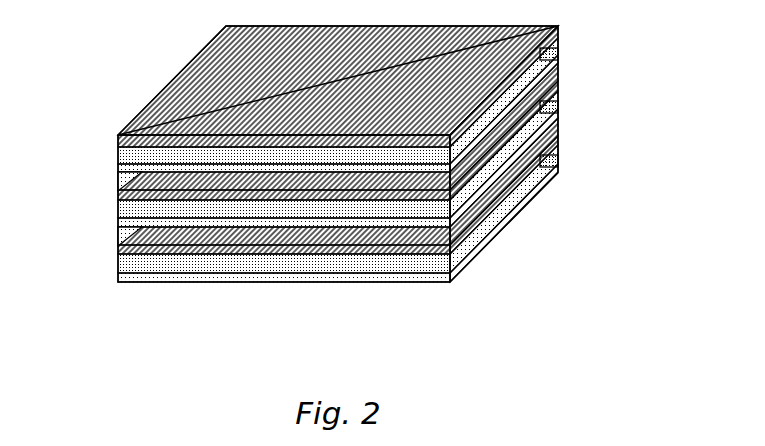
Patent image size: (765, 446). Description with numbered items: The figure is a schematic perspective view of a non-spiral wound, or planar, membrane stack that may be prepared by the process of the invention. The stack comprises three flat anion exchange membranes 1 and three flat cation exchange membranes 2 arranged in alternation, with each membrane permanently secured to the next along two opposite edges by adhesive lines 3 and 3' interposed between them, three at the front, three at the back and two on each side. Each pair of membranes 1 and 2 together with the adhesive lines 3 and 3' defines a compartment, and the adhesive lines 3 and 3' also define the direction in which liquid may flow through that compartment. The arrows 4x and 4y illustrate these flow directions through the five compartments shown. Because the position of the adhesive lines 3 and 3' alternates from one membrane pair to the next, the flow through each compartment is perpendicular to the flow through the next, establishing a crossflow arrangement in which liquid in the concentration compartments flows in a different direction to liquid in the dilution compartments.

The anion exchange membrane 1 is at (205, 87).
The cation exchange membrane 2 is at (515, 103).
The adhesive line 3 is at (338, 212).
The adhesive line 3' is at (338, 192).
The arrow 4x is at (555, 58).
The arrow 4y is at (281, 269).